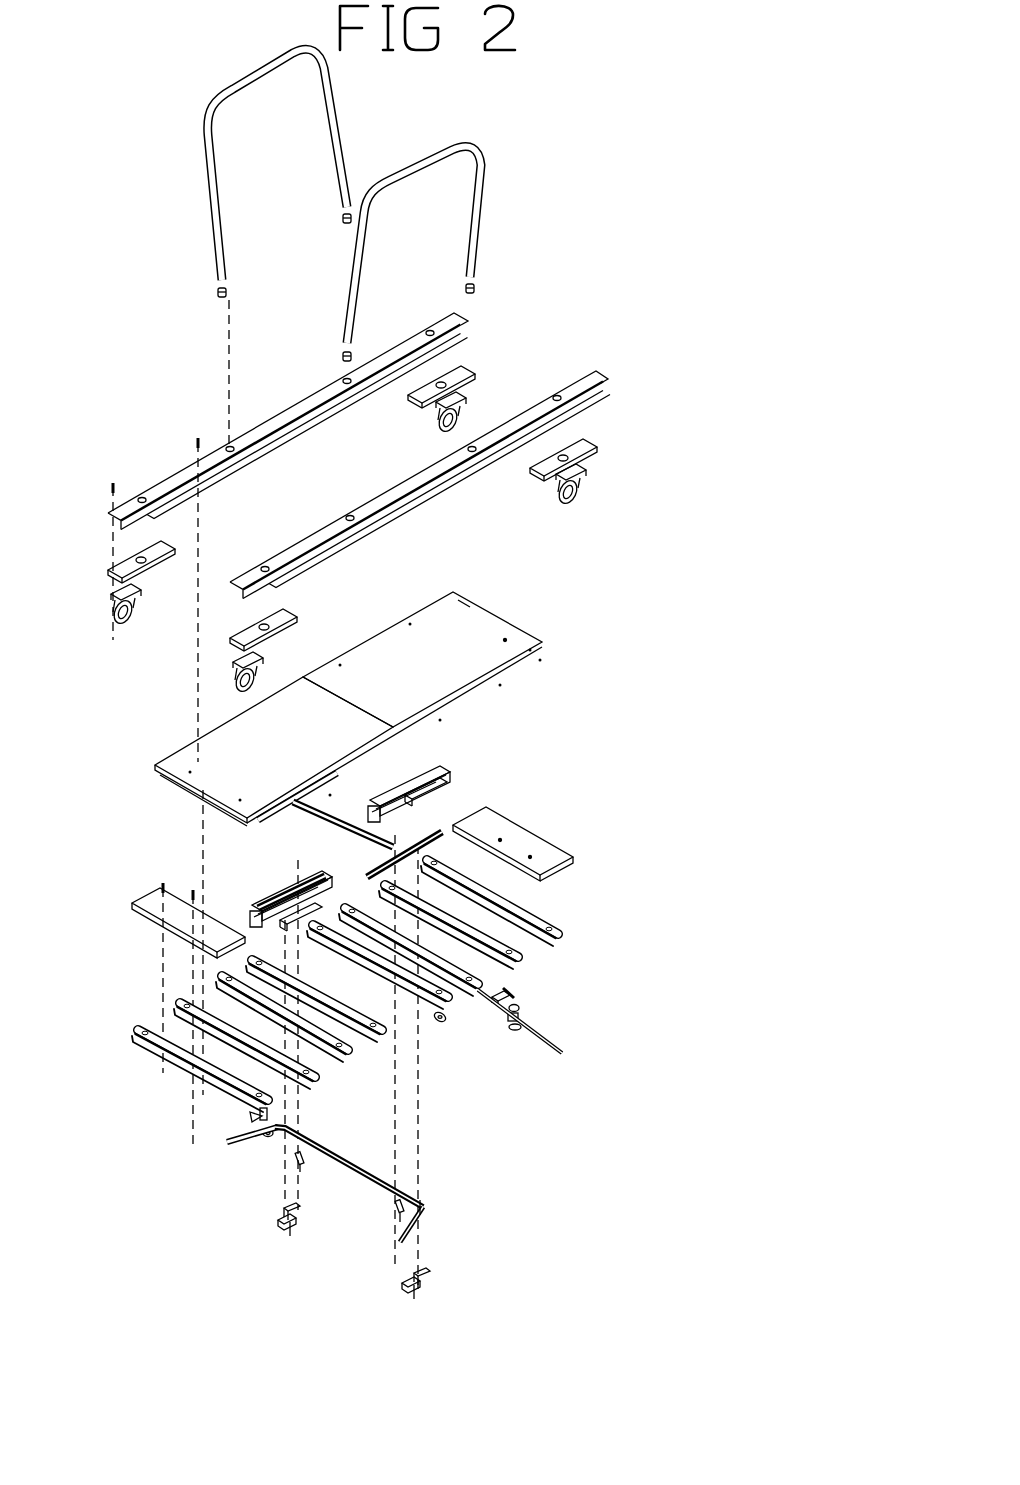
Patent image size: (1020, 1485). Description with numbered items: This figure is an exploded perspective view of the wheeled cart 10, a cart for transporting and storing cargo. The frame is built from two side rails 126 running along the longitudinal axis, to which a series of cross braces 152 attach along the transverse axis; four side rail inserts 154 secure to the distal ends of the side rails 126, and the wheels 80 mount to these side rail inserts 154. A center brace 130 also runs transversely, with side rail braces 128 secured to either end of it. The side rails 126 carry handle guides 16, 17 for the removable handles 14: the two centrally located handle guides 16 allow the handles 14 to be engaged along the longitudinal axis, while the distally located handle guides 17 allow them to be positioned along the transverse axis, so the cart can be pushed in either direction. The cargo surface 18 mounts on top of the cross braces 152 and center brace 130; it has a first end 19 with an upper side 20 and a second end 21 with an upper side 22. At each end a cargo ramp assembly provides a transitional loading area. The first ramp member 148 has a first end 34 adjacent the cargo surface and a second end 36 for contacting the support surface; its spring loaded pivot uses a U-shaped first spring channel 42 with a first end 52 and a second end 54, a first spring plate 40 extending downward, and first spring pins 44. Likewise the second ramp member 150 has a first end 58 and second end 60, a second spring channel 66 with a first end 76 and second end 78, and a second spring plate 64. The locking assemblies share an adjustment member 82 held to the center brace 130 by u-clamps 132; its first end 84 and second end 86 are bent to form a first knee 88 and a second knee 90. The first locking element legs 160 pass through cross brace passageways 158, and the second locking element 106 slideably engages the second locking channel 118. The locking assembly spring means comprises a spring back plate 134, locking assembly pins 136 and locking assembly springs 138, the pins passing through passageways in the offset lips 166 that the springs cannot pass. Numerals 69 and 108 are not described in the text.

The wheeled cart 10 is at (712, 380).
The handles 14 is at (283, 60).
The handle guides 16 is at (347, 374).
The handle guides 17 is at (430, 330).
The cargo surface 18 is at (458, 683).
The first end 19 is at (215, 794).
The upper side 20 is at (165, 760).
The second end 21 is at (463, 603).
The upper side 22 is at (507, 637).
The first end 34 is at (148, 912).
The second end 36 is at (138, 900).
The first spring plate 40 is at (262, 1118).
The first spring channel 42 is at (265, 1138).
The first spring pins 44 is at (250, 1115).
The first end 52 is at (262, 1133).
The second end 54 is at (245, 1126).
The first end 58 is at (492, 808).
The second end 60 is at (523, 830).
The second spring plate 64 is at (495, 998).
The second spring channel 66 is at (520, 1017).
The pin 69 is at (510, 994).
The first end 76 is at (520, 1008).
The second end 78 is at (518, 1030).
The wheels 80 is at (113, 612).
The adjustment member 82 is at (357, 1163).
The first end 84 is at (440, 1218).
The second end 86 is at (292, 1137).
The first knee 88 is at (412, 1200).
The second knee 90 is at (296, 1130).
The second locking element 106 is at (385, 795).
The spacer plate 108 is at (442, 1022).
The second locking channel 118 is at (287, 1216).
The side rails 126 is at (310, 402).
The side rail braces 128 is at (256, 821).
The center brace 130 is at (328, 822).
The u-clamps 132 is at (303, 1153).
The spring back plate 134 is at (420, 848).
The locking assembly pins 136 is at (283, 1198).
The locking assembly springs 138 is at (280, 1205).
The first ramp member 148 is at (150, 926).
The second ramp member 150 is at (553, 853).
The cross braces 152 is at (168, 1028).
The side rail inserts 154 is at (124, 580).
The cross brace passageways 158 is at (555, 1054).
The first locking element legs 160 is at (396, 798).
The offset lips 166 is at (445, 790).